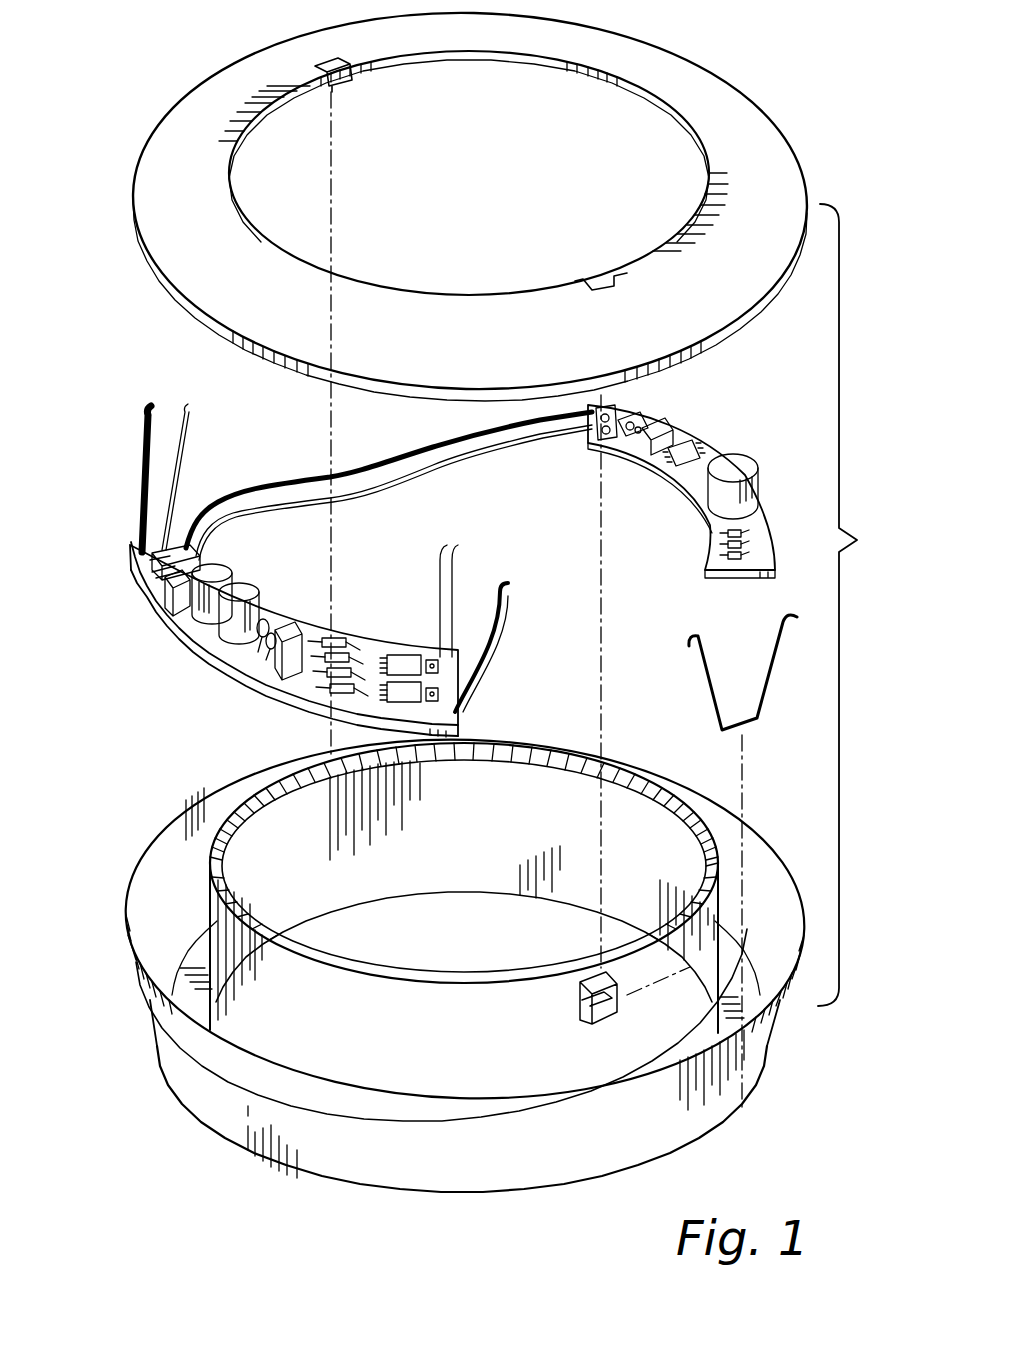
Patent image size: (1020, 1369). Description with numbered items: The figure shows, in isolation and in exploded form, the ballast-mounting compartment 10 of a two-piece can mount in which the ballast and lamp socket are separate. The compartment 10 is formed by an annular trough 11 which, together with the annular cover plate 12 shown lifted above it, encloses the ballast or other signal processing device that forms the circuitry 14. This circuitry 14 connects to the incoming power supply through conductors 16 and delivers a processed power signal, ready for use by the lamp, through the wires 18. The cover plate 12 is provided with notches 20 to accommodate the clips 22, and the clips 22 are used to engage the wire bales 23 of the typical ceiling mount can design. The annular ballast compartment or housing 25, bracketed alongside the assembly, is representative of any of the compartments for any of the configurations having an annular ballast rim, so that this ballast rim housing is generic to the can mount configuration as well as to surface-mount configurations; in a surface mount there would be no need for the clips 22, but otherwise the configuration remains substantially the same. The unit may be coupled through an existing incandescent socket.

The compartment 10 is at (183, 1057).
The annular trough 11 is at (183, 887).
The annular cover plate 12 is at (170, 196).
The circuitry 14 is at (180, 645).
The conductors 16 is at (186, 402).
The wires 18 is at (470, 543).
The notches 20 is at (338, 85).
The clips 22 is at (578, 995).
The wire bales 23 is at (768, 700).
The annular ballast compartment 25 is at (864, 605).